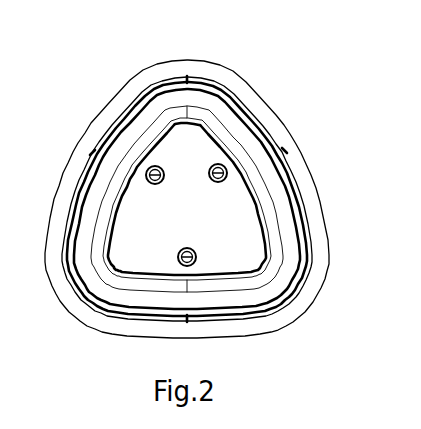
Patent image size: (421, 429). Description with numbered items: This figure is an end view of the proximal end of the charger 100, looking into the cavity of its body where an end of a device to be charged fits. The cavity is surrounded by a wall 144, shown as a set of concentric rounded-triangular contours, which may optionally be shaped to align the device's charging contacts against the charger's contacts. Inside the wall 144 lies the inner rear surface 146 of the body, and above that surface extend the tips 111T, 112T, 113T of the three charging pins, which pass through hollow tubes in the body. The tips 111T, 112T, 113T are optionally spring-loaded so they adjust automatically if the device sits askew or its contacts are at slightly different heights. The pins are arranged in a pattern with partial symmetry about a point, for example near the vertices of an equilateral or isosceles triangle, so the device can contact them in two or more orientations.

The charger 100 is at (330, 140).
The spring-loaded tip 111T is at (187, 257).
The spring-loaded tip 112T is at (218, 173).
The spring-loaded tip 113T is at (156, 175).
The wall 144 is at (280, 268).
The inner rear surface 146 is at (122, 250).